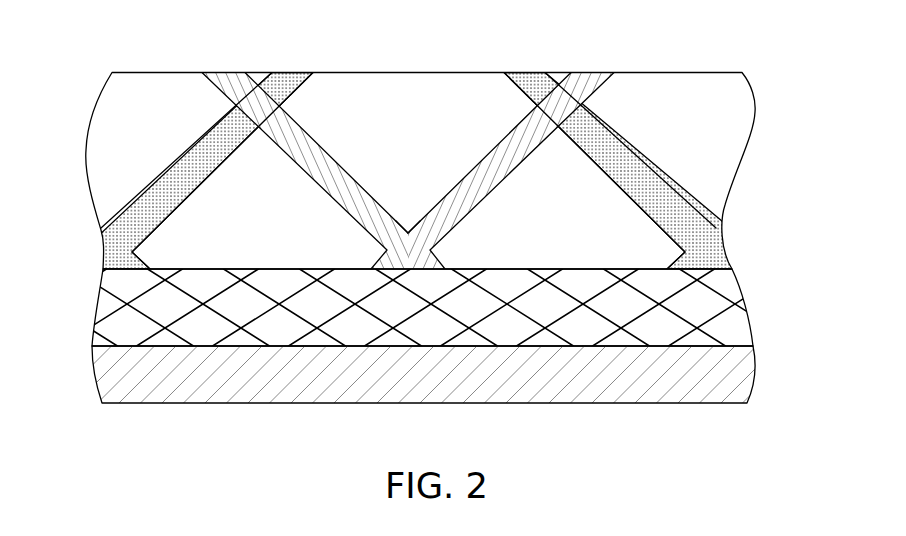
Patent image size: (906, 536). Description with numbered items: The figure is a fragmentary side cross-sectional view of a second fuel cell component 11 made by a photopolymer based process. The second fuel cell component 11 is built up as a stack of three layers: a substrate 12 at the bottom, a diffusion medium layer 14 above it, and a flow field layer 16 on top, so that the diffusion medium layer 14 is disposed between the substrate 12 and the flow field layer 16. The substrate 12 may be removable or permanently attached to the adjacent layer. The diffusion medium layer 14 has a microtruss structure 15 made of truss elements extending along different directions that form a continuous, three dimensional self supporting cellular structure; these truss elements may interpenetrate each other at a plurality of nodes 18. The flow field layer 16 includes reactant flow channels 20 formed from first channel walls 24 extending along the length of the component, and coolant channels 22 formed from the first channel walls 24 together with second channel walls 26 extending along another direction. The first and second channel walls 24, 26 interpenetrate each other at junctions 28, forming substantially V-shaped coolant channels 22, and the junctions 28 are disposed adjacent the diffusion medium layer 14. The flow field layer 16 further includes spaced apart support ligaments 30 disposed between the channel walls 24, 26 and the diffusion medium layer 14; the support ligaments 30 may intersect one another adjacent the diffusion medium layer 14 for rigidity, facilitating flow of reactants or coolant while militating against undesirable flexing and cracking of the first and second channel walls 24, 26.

The second fuel cell component 11 is at (789, 97).
The substrate 12 is at (753, 380).
The diffusion medium layer 14 is at (755, 323).
The microtruss structure 15 is at (640, 312).
The flow field layer 16 is at (758, 69).
The nodes 18 is at (237, 323).
The reactant flow channels 20 is at (157, 104).
The coolant channels 22 is at (419, 102).
The first channel walls 24 is at (314, 140).
The second channel walls 26 is at (496, 187).
The junctions 28 is at (408, 231).
The support ligaments 30 is at (212, 173).